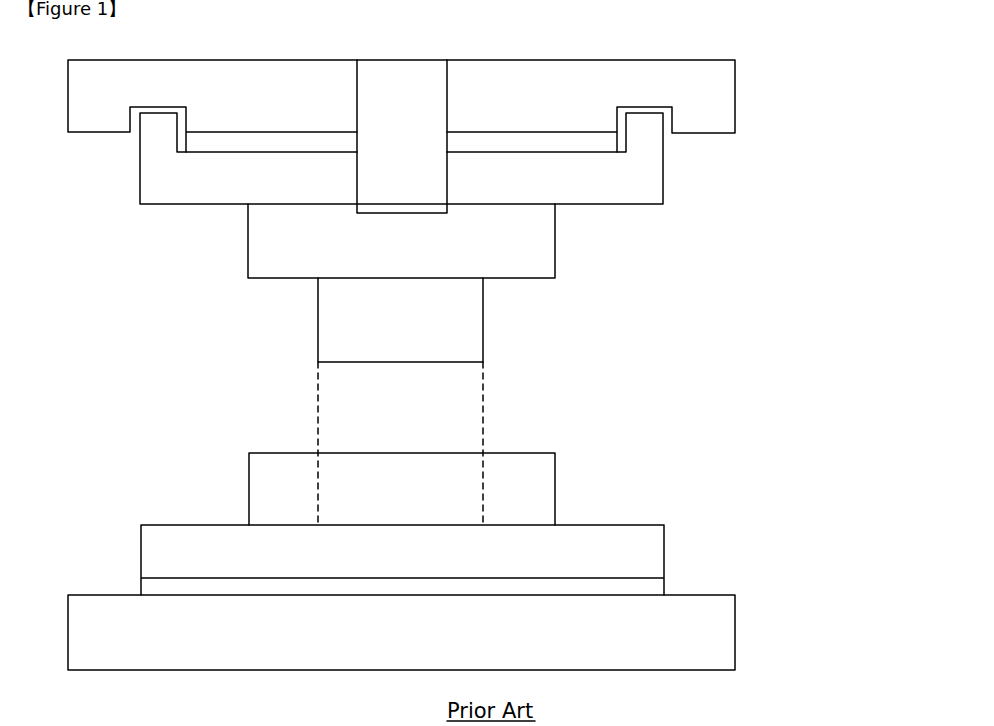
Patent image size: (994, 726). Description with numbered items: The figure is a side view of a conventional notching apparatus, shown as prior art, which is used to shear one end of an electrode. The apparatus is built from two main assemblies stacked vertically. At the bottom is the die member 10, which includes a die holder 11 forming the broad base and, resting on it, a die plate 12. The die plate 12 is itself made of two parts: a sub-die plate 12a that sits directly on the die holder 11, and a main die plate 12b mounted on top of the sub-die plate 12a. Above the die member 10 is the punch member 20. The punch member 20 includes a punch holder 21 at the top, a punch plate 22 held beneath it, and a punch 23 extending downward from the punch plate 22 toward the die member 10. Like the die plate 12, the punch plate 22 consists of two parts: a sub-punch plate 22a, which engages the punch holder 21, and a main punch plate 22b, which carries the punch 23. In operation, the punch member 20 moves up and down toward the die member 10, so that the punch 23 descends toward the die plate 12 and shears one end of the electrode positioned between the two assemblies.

The die member 10 is at (870, 520).
The die holder 11 is at (735, 632).
The die plate 12 is at (817, 497).
The sub-die plate 12a is at (664, 550).
The main die plate 12b is at (555, 490).
The punch member 20 is at (873, 98).
The punch holder 21 is at (735, 97).
The punch plate 22 is at (818, 178).
The sub-punch plate 22a is at (663, 178).
The main punch plate 22b is at (557, 236).
The punch 23 is at (483, 328).